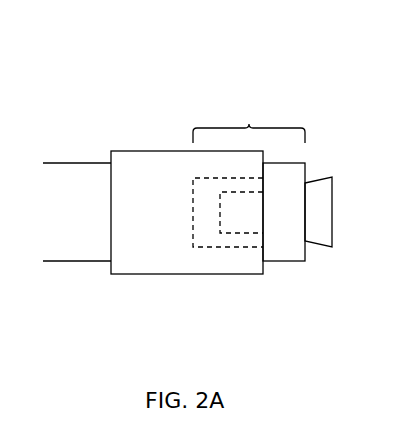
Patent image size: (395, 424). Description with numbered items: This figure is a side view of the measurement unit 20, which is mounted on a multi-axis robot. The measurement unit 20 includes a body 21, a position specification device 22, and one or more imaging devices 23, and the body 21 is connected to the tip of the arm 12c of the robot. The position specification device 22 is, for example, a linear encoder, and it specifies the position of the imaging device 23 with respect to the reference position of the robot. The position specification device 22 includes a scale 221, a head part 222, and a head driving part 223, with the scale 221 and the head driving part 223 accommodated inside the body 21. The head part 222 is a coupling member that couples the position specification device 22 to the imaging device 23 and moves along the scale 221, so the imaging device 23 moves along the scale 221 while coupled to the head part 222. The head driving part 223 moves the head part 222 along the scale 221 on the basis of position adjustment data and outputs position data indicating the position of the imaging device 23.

The measurement unit 20 is at (113, 82).
The arm 12c is at (58, 262).
The body 21 is at (119, 151).
The position specification device 22 is at (249, 122).
The scale 221 is at (207, 247).
The head driving part 223 is at (252, 234).
The head part 222 is at (298, 262).
The imaging device 23 is at (318, 183).